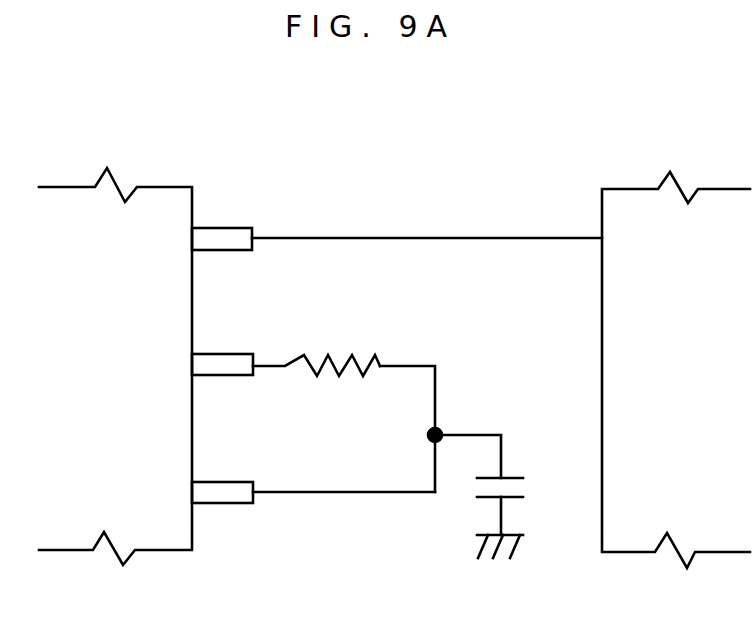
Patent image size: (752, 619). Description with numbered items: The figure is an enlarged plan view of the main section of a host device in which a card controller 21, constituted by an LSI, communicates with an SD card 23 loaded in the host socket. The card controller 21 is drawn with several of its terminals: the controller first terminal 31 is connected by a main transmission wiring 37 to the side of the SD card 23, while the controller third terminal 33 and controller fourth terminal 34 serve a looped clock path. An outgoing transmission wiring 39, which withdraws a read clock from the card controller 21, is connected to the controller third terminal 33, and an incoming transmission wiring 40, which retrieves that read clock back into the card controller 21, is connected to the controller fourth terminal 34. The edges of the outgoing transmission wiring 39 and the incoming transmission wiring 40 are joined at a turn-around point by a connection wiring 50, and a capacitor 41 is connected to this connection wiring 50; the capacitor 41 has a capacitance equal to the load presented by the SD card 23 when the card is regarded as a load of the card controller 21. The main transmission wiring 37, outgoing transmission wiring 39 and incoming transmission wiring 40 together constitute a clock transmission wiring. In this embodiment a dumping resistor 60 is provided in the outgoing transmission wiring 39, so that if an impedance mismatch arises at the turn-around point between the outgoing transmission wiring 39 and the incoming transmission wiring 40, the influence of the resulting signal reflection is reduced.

The card controller 21 is at (149, 202).
The SD card 23 is at (637, 208).
The controller first terminal 31 is at (218, 228).
The controller third terminal 33 is at (220, 354).
The controller fourth terminal 34 is at (220, 493).
The main transmission wiring 37 is at (435, 238).
The outgoing transmission wiring 39 is at (418, 368).
The incoming transmission wiring 40 is at (340, 493).
The capacitor 41 is at (518, 478).
The connection wiring 50 is at (440, 433).
The dumping resistor 60 is at (332, 367).